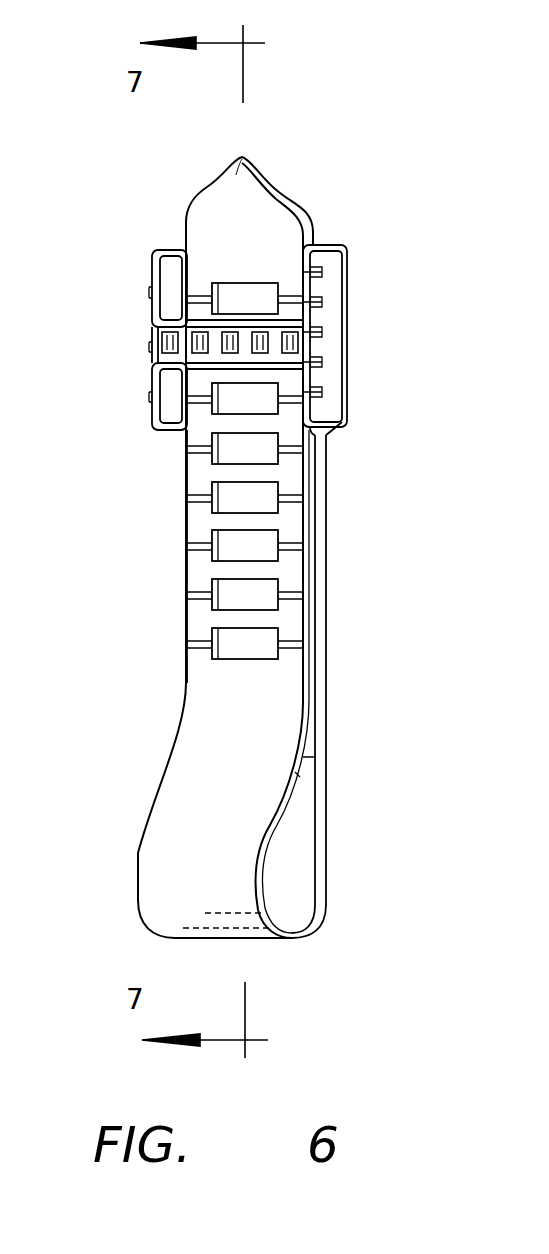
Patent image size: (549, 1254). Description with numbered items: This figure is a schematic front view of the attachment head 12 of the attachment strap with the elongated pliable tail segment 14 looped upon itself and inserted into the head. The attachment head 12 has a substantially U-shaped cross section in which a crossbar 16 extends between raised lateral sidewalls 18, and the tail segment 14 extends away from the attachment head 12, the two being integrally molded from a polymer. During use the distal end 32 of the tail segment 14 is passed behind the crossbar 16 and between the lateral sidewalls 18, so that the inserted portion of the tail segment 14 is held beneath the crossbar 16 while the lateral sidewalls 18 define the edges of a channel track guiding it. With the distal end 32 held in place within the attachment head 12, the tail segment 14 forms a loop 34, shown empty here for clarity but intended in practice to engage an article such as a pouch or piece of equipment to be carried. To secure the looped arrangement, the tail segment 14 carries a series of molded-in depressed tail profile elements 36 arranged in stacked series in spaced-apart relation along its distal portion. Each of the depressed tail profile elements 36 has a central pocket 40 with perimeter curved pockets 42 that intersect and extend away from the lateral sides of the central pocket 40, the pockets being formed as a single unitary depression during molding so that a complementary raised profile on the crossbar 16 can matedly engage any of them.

The attachment head 12 is at (350, 272).
The tail segment 14 is at (176, 725).
The crossbar 16 is at (202, 365).
The lateral sidewalls 18 is at (175, 270).
The distal end 32 is at (245, 190).
The loop 34 is at (292, 863).
The depressed tail profile elements 36 is at (292, 472).
The central pocket 40 is at (262, 397).
The perimeter curved pockets 42 is at (197, 457).